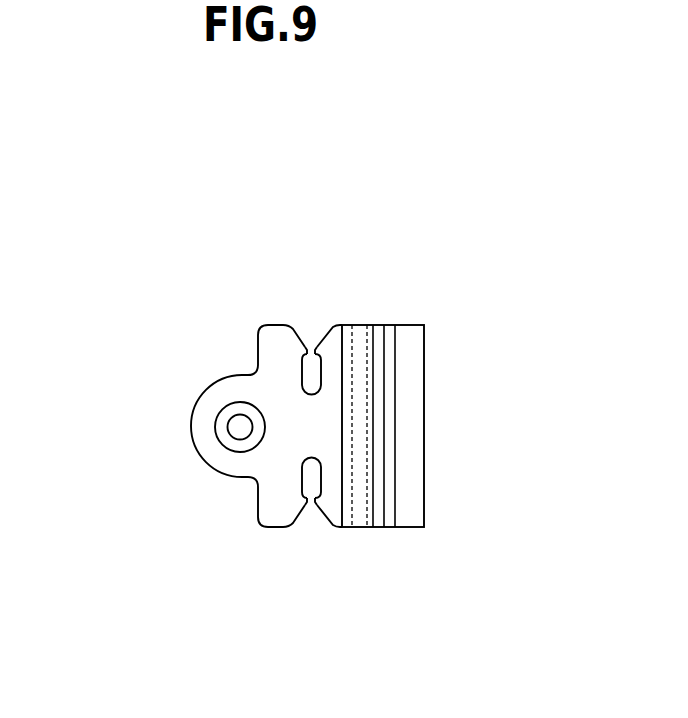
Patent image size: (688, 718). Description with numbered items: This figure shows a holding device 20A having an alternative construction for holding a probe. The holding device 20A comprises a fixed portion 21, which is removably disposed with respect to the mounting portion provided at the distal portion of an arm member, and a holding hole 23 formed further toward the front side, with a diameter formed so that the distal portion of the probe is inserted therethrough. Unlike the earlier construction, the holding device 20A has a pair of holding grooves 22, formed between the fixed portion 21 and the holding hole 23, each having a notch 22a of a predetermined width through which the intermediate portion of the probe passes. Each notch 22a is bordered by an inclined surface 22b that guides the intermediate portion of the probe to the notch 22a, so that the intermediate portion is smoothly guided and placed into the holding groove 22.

The holding device 20A is at (372, 222).
The fixed portion 21 is at (396, 305).
The holding groove 22 is at (327, 367).
The notch portion 22a is at (310, 333).
The inclined surface 22b is at (325, 324).
The holding hole 23 is at (218, 427).